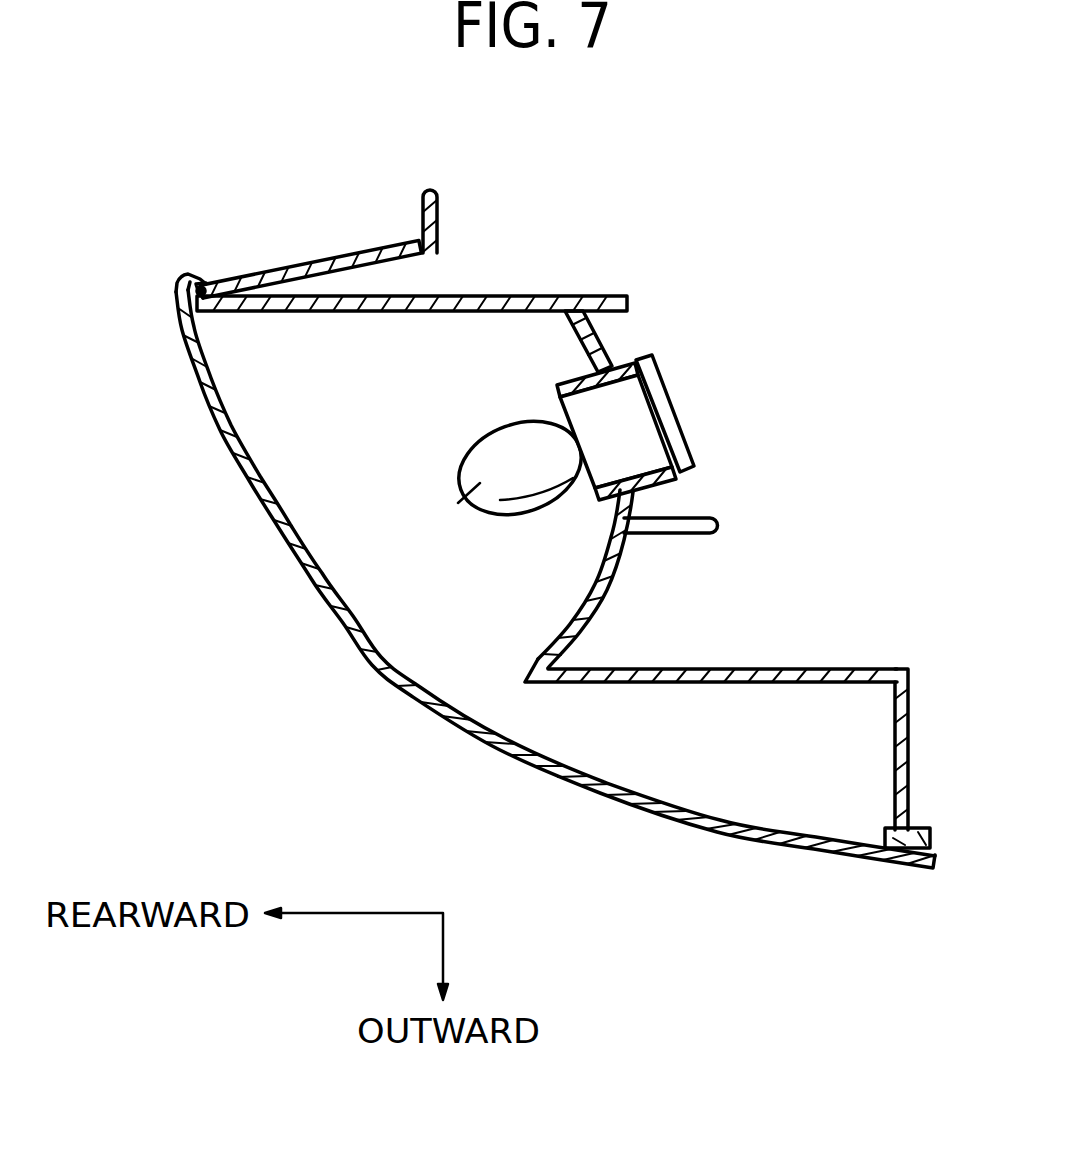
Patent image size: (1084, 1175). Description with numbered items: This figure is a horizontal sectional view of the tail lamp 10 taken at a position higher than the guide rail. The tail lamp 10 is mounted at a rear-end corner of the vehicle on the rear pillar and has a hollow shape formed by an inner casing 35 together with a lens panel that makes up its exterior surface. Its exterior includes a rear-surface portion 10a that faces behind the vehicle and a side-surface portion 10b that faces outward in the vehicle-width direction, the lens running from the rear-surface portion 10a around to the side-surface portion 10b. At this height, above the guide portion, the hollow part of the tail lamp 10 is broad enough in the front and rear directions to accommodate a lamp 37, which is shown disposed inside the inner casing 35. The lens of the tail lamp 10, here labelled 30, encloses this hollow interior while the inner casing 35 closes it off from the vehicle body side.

The tail lamp 10 is at (817, 321).
The rear-surface portion 10a is at (220, 420).
The side-surface portion 10b is at (782, 836).
The lens 30 is at (346, 654).
The inner casing 35 is at (717, 668).
The lamp 37 is at (463, 490).